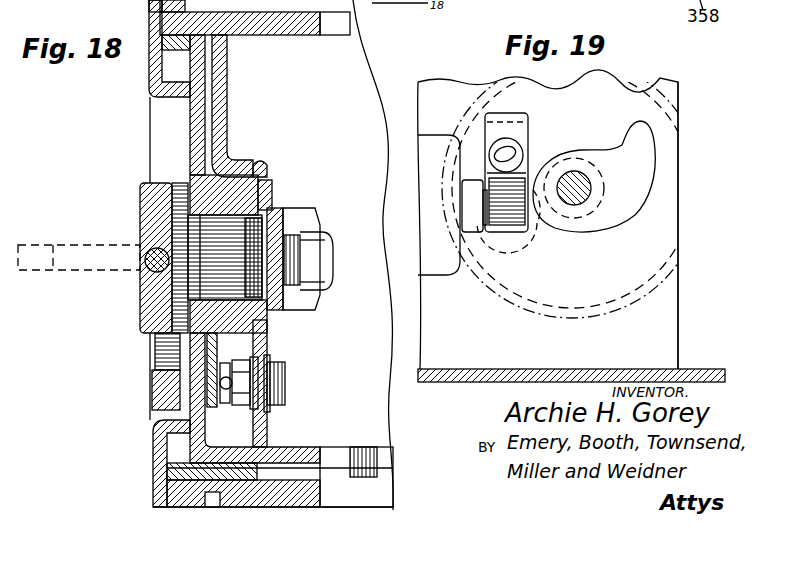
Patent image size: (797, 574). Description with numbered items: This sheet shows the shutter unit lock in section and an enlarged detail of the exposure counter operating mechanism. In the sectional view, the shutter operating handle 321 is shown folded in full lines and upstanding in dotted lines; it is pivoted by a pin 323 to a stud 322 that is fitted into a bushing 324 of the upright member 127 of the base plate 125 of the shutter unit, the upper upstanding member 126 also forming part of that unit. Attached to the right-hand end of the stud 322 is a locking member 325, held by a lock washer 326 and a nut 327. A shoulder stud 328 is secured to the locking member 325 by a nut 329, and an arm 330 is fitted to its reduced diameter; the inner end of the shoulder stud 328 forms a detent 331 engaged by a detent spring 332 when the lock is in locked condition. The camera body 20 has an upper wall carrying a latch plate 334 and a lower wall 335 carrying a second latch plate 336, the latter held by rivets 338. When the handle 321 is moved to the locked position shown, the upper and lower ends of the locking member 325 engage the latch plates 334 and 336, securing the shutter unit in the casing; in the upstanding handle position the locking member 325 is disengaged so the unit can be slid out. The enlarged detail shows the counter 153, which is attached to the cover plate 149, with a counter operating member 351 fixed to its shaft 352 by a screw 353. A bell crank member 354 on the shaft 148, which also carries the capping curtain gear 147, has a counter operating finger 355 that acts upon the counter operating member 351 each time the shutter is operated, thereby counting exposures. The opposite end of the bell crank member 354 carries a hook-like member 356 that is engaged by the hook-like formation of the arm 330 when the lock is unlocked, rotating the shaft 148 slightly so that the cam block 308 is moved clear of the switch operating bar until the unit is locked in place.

In FIG. 18, the camera body 20 is at (150, 15).
In FIG. 18, the latch plate 334 is at (165, 45).
In FIG. 18, the cover plate 149 is at (152, 78).
In FIG. 18, the lower upstanding member 127 is at (192, 160).
In FIG. 19, the lower upstanding member 127 is at (692, 225).
In FIG. 18, the rivets 338 is at (289, 28).
In FIG. 18, the locking member 325 is at (222, 124).
In FIG. 18, the bushing 324 is at (257, 172).
In FIG. 18, the shoulder stud 328 is at (272, 196).
In FIG. 18, the stud 322 is at (276, 254).
In FIG. 18, the nut 327 is at (326, 259).
In FIG. 18, the lock washer 326 is at (277, 310).
In FIG. 18, the pin 323 is at (158, 258).
In FIG. 18, the shutter operating handle 321 is at (82, 264).
In FIG. 18, the nut 329 is at (260, 356).
In FIG. 18, the detent 331 is at (228, 375).
In FIG. 18, the detent spring 332 is at (226, 406).
In FIG. 18, the arm 330 is at (272, 412).
In FIG. 18, the upper upstanding member 126 is at (309, 455).
In FIG. 18, the second latch plate 336 is at (172, 476).
In FIG. 18, the lower wall 335 is at (305, 490).
In FIG. 19, the counter 153 is at (438, 140).
In FIG. 19, the counter operating member 351 is at (510, 126).
In FIG. 19, the counter operating finger 355 is at (533, 138).
In FIG. 19, the screw 353 is at (580, 145).
In FIG. 19, the shaft 148 is at (581, 173).
In FIG. 19, the hook-like member 356 is at (642, 147).
In FIG. 19, the bell crank member 354 is at (541, 226).
In FIG. 19, the cam block 308 is at (521, 247).
In FIG. 19, the shaft 352 is at (490, 246).
In FIG. 19, the capping curtain gear 147 is at (692, 240).
In FIG. 19, the base plate 125 is at (576, 370).